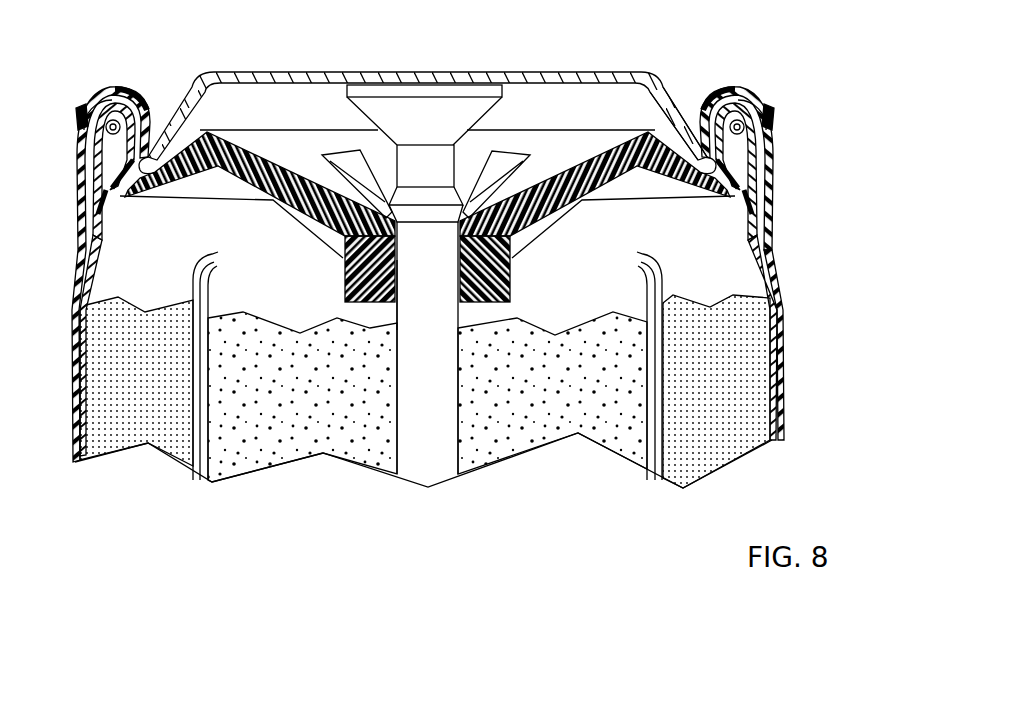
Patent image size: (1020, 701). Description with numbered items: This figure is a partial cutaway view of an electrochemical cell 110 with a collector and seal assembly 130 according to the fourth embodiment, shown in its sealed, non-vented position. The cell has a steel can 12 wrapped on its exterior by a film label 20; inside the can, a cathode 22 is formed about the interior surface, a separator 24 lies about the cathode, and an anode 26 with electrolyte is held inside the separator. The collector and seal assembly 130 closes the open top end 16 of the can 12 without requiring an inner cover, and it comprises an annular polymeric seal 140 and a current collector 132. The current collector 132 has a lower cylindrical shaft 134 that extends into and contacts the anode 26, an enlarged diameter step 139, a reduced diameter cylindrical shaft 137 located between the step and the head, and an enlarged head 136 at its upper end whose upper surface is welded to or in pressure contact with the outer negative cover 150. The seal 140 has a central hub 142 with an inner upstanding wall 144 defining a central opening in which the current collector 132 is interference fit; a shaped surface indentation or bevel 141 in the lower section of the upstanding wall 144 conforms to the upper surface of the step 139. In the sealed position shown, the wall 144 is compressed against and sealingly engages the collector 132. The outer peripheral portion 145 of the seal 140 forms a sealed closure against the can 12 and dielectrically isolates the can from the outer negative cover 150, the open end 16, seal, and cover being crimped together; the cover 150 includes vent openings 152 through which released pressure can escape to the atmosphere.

The electrochemical cell 110 is at (797, 93).
The open top end 16 is at (620, 60).
The steel can 12 is at (787, 372).
The film label 20 is at (783, 330).
The positive electrode (cathode) 22 is at (737, 440).
The separator 24 is at (188, 465).
The negative electrode (anode) 26 is at (293, 443).
The collector and seal assembly 130 is at (363, 129).
The current collector 132 is at (466, 310).
The lower cylindrical shaft 134 is at (428, 463).
The enlarged head 136 is at (435, 110).
The reduced diameter cylindrical shaft 137 is at (443, 168).
The enlarged diameter step 139 is at (478, 178).
The annular polymeric seal 140 is at (262, 158).
The shaped surface indentation (bevel) 141 is at (458, 298).
The central hub 142 is at (360, 273).
The inner upstanding wall 144 is at (400, 258).
The outer peripheral portion 145 is at (735, 90).
The outer negative cover 150 is at (228, 78).
The vent openings 152 is at (678, 124).